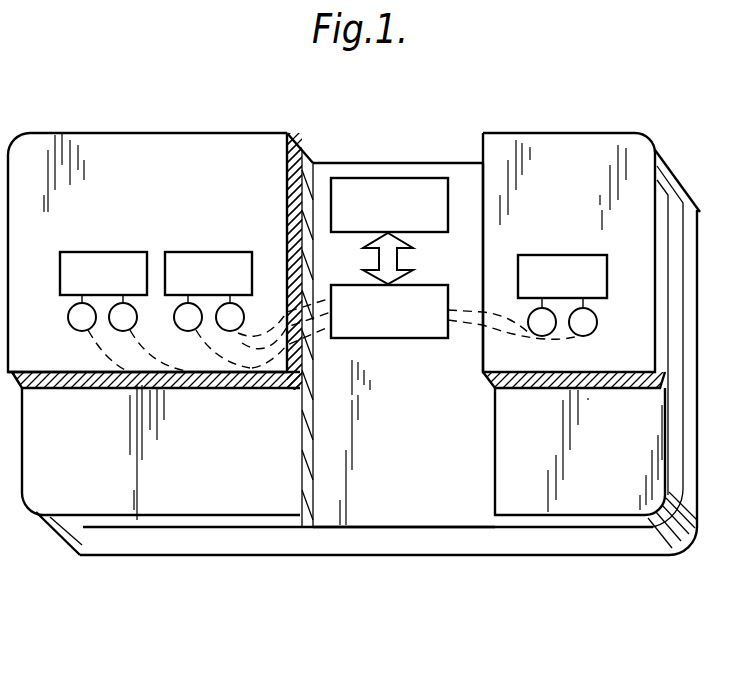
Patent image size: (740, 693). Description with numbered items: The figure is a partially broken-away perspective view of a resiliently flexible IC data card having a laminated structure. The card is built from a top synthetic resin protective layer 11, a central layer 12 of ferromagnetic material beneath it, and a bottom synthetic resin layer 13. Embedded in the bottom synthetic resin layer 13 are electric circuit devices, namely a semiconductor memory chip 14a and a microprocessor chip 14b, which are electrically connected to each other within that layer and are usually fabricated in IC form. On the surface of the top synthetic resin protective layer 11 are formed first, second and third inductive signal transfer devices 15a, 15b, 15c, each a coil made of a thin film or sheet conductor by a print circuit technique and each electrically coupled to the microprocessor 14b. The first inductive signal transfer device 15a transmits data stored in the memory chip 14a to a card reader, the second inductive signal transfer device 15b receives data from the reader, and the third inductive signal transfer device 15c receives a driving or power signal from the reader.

The top synthetic resin protective layer 11 is at (163, 140).
The central layer of ferromagnetic material 12 is at (228, 466).
The bottom synthetic resin layer 13 is at (432, 466).
The semiconductor memory chip 14a is at (386, 180).
The microprocessor chip 14b is at (423, 341).
The first inductive signal transfer device 15a is at (125, 252).
The second inductive signal transfer device 15b is at (205, 252).
The third inductive signal transfer device 15c is at (555, 253).